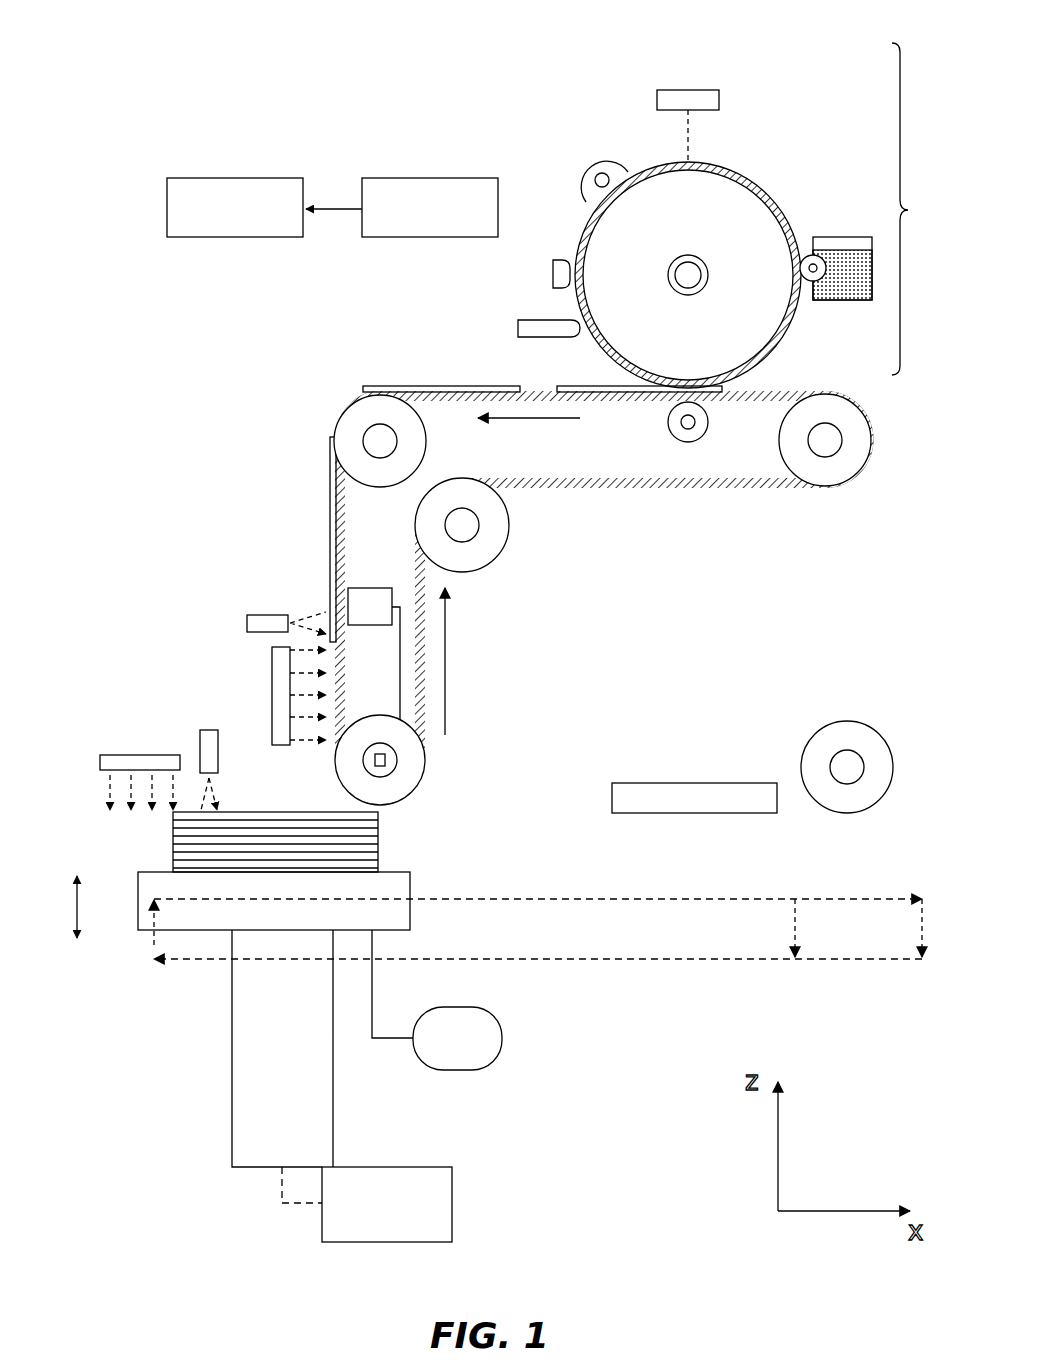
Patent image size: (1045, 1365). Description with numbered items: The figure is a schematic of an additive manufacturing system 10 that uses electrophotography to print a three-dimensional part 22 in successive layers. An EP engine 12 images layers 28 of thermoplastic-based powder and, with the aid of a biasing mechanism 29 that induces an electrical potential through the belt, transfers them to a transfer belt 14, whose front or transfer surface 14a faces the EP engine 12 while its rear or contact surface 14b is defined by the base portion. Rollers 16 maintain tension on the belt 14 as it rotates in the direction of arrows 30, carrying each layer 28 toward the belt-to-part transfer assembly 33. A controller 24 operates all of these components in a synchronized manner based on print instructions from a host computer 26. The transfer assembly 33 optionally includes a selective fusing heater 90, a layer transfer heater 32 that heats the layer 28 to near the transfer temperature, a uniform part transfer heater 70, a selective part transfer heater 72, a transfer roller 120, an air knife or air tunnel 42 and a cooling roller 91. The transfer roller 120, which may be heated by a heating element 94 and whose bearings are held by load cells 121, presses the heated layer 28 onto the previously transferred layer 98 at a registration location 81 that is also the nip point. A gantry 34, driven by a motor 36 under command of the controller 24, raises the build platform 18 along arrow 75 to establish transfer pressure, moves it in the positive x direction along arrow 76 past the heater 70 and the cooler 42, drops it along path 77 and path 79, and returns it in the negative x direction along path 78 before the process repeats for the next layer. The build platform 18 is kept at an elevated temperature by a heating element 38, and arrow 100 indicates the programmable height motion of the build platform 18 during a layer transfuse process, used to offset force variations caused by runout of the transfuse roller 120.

The additive manufacturing system 10 is at (213, 46).
The EP engine 12 is at (732, 215).
The transfer belt 14 is at (604, 579).
The front or transfer surface 14a is at (604, 579).
The rear or contact surface 14b is at (763, 394).
The rollers 16 is at (363, 417).
The build platform 18 is at (137, 896).
The 3D part 22 is at (382, 850).
The controller 24 is at (217, 178).
The host computer 26 is at (412, 178).
The imaged layers 28 is at (796, 318).
The biasing mechanism 29 is at (700, 436).
The arrows 30 is at (520, 420).
The layer transfer heater 32 is at (270, 660).
The belt-to-part transfer assembly 33 is at (834, 1017).
The gantry 34 is at (334, 1108).
The motor 36 is at (453, 1214).
The heating element 38 is at (503, 1039).
The air knife or air tunnel 42 is at (697, 783).
The uniform part transfer heater 70 is at (120, 756).
The selective part transfer heater 72 is at (205, 732).
The arrow 75 is at (153, 941).
The arrow 76 is at (521, 900).
The path 77 is at (794, 928).
The path 78 is at (595, 962).
The vertical motion 79 is at (906, 904).
The registration location 81 is at (382, 808).
The selective fusing heater 90 is at (250, 604).
The cooling roller 91 is at (860, 722).
The heating element 94 is at (352, 590).
The previously transferred layer 98 is at (176, 816).
The arrow 100 is at (76, 917).
The transfer roller 120 is at (364, 716).
The load cells 121 is at (386, 760).